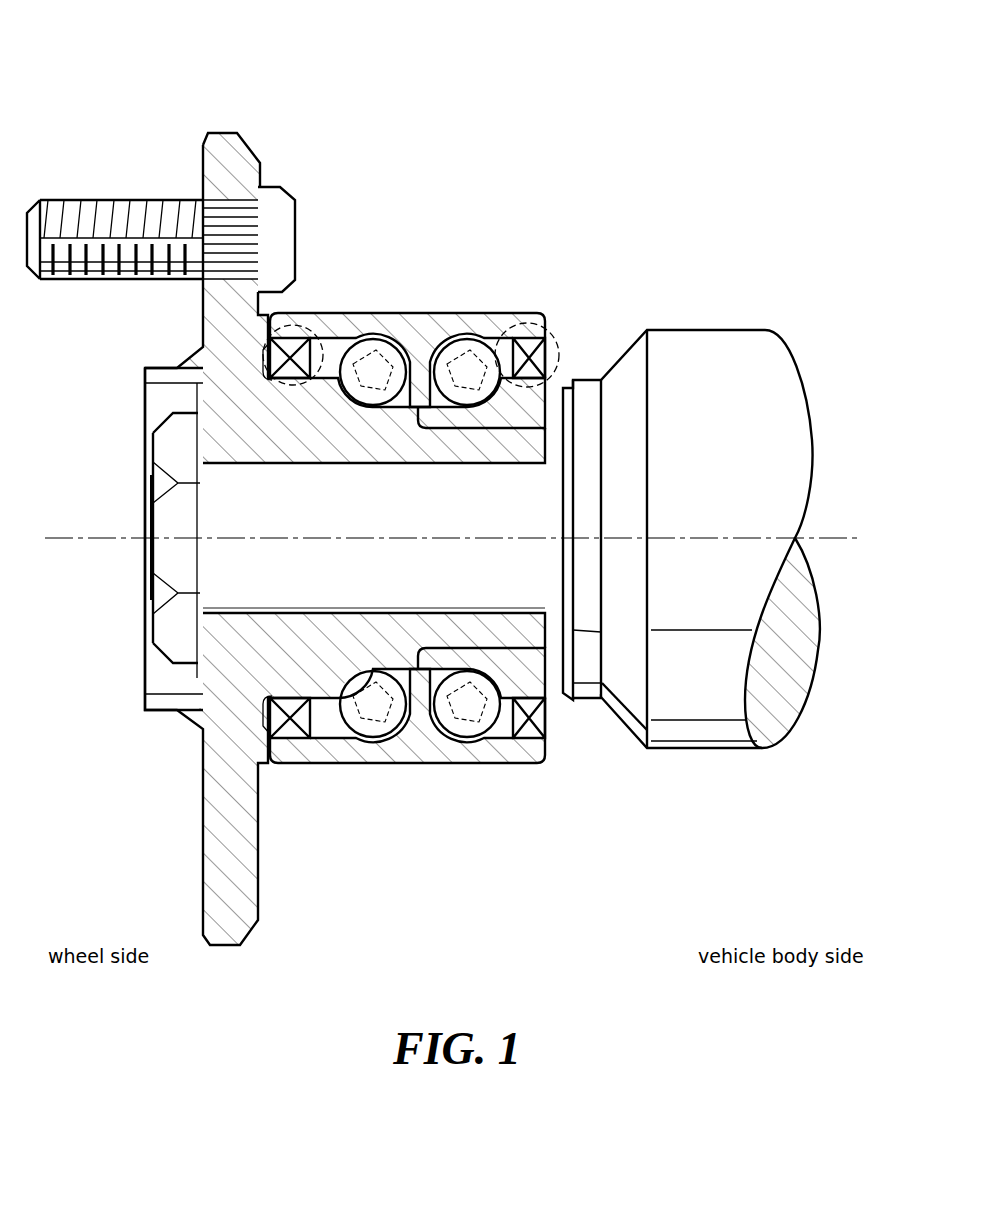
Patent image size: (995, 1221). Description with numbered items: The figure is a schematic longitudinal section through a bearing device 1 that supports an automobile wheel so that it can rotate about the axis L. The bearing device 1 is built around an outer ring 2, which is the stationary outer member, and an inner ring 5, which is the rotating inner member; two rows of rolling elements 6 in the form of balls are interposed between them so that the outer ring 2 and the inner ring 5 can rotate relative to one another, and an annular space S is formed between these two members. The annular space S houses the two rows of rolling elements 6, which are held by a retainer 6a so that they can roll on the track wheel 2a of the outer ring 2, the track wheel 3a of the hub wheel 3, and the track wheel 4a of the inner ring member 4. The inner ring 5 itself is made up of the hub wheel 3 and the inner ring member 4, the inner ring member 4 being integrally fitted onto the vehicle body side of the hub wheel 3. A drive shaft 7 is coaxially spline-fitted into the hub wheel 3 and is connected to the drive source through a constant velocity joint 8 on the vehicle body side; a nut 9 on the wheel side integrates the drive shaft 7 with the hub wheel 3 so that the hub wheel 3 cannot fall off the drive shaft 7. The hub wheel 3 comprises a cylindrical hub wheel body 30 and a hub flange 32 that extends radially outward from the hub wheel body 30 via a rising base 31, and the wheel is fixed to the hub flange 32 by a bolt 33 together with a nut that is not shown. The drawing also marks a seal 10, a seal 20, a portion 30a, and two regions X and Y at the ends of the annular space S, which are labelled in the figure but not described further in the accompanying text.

The bearing device 1 is at (77, 48).
The outer ring 2 is at (407, 543).
The track wheel of the outer ring 2a is at (470, 344).
The hub wheel 3 is at (286, 567).
The track wheel of the hub wheel 3a is at (374, 400).
The inner ring member 4 is at (320, 593).
The track wheel of the inner ring member 4a is at (470, 677).
The inner ring 5 is at (133, 538).
The rolling elements 6 is at (383, 343).
The retainer 6a is at (367, 722).
The drive shaft 7 is at (260, 526).
The constant velocity joint 8 is at (705, 345).
The nut 9 is at (170, 556).
The inboard seal 10 is at (525, 345).
The outboard seal 20 is at (273, 355).
The hub wheel body 30 is at (318, 660).
The seal fitting portion 30a is at (275, 722).
The rising base 31 is at (258, 722).
The hub flange 32 is at (222, 932).
The bolt 33 is at (271, 200).
The annular space S is at (420, 714).
The enlarged region X is at (560, 350).
The enlarged region Y is at (302, 328).
The axis L is at (835, 535).